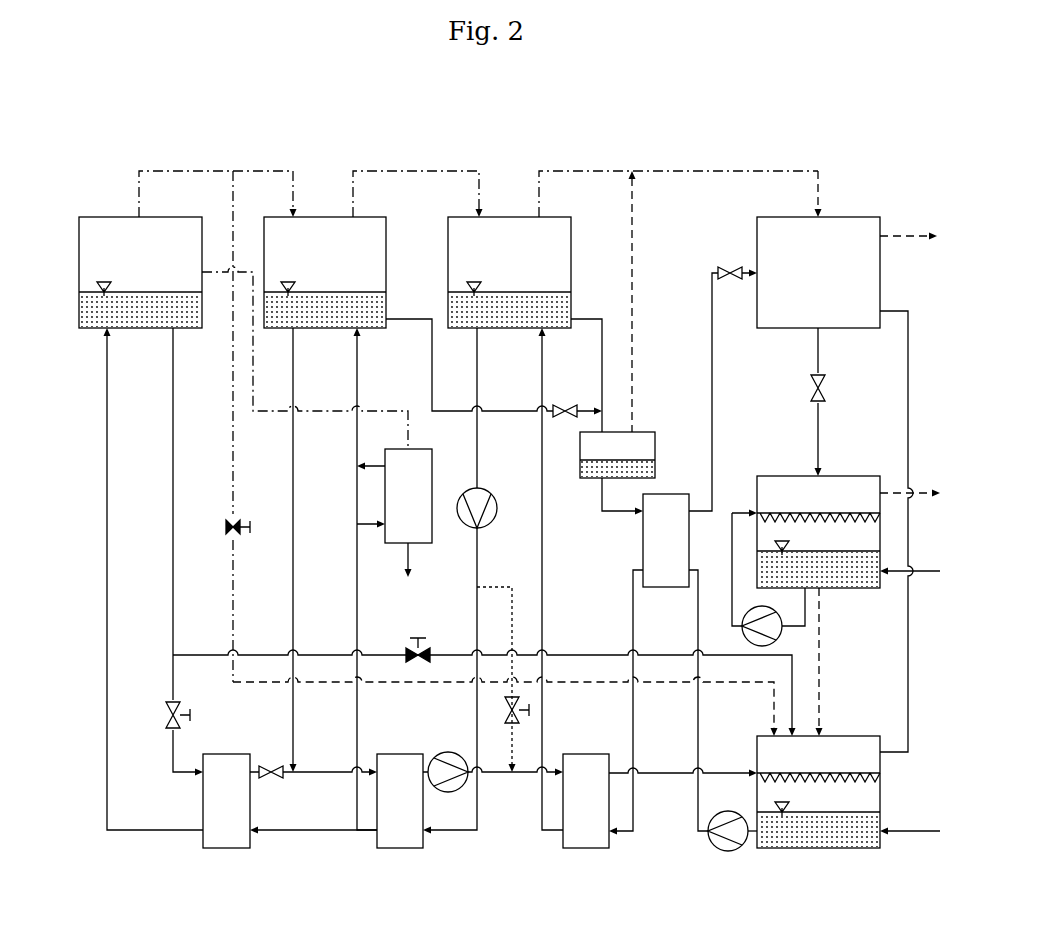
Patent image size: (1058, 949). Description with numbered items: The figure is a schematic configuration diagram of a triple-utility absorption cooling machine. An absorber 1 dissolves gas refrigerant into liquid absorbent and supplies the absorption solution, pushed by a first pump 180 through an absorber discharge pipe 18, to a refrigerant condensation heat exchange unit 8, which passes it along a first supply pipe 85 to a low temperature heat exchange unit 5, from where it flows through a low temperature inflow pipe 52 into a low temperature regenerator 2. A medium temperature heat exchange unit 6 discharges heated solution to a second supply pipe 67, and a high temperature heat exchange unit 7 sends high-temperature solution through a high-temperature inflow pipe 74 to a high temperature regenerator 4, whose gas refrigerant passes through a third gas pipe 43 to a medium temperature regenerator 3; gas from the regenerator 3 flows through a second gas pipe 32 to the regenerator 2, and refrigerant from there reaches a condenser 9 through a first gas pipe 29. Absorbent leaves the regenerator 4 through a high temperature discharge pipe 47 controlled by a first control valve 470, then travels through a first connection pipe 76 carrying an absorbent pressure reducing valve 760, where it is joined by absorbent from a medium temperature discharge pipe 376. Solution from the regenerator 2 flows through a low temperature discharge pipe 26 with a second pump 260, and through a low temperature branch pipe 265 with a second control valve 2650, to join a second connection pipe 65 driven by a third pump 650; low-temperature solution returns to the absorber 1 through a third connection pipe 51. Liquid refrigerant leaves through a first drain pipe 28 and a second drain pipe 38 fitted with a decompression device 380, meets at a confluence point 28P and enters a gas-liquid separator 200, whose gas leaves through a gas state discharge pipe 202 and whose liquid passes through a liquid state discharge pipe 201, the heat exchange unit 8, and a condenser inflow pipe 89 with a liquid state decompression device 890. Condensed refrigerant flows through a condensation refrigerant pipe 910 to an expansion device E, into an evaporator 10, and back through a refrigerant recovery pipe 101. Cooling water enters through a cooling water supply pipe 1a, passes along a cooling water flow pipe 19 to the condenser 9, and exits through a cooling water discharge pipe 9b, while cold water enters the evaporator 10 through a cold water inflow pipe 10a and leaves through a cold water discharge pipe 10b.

The absorber 1 is at (831, 848).
The cooling water supply pipe 1a is at (911, 831).
The low temperature regenerator 2 is at (514, 328).
The medium temperature regenerator 3 is at (331, 328).
The high temperature regenerator 4 is at (145, 328).
The low temperature heat exchange unit 5 is at (590, 848).
The medium temperature heat exchange unit 6 is at (403, 848).
The high temperature heat exchange unit 7 is at (229, 848).
The refrigerant condensation heat exchange unit 8 is at (680, 494).
The condenser 9 is at (780, 328).
The cooling water discharge pipe 9b is at (917, 236).
The evaporator 10 is at (845, 588).
The cold water inflow pipe 10a is at (920, 571).
The cold water discharge pipe 10b is at (920, 493).
The absorber discharge pipe 18 is at (698, 713).
The cooling water flow pipe 19 is at (908, 676).
The low temperature discharge pipe 26 is at (477, 565).
The first drain pipe 28 is at (590, 319).
The confluence point 28P is at (605, 411).
The first gas pipe 29 is at (611, 171).
The second gas pipe 32 is at (425, 171).
The second drain pipe 38 is at (452, 411).
The third gas pipe 43 is at (197, 171).
The high temperature discharge pipe 47 is at (173, 575).
The third connection pipe 51 is at (660, 773).
The low temperature inflow pipe 52 is at (542, 515).
The second connection pipe 65 is at (496, 775).
The second supply pipe 67 is at (303, 830).
The high-temperature inflow pipe 74 is at (107, 575).
The first connection pipe 76 is at (320, 772).
The first supply pipe 85 is at (633, 617).
The condenser inflow pipe 89 is at (712, 428).
The refrigerant recovery pipe 101 is at (819, 680).
The first pump 180 is at (730, 851).
The gas-liquid separator 200 is at (645, 432).
The liquid state discharge pipe 201 is at (618, 511).
The gas state discharge pipe 202 is at (632, 255).
The second pump 260 is at (488, 490).
The low temperature branch pipe 265 is at (512, 620).
The medium temperature discharge pipe 376 is at (357, 527).
The decompression device 380 is at (568, 405).
The first control valve 470 is at (180, 702).
The third pump 650 is at (449, 752).
The absorbent pressure reducing valve 760 is at (272, 766).
The liquid state decompression device 890 is at (730, 261).
The condensation refrigerant pipe 910 is at (818, 437).
The second control valve 2650 is at (530, 706).
The expansion device E is at (826, 390).